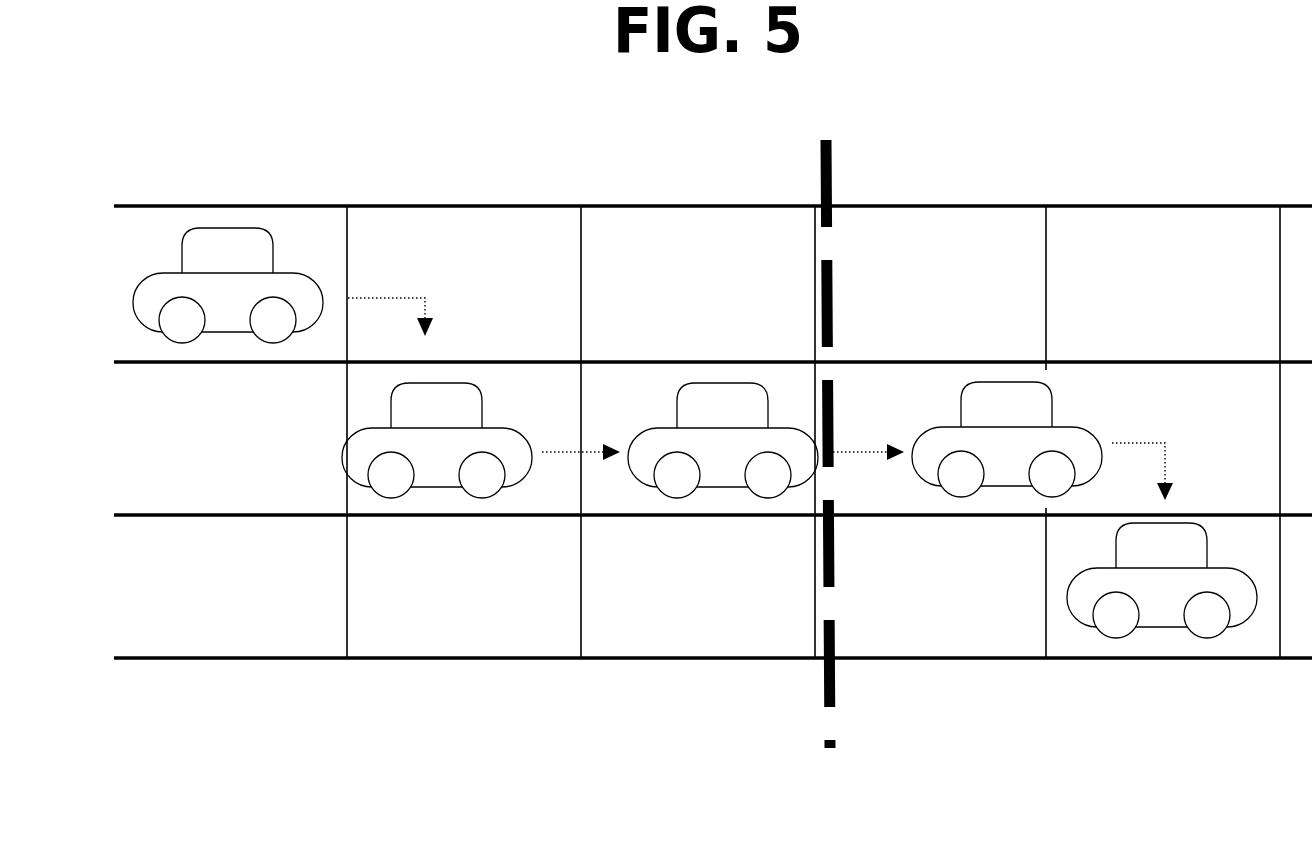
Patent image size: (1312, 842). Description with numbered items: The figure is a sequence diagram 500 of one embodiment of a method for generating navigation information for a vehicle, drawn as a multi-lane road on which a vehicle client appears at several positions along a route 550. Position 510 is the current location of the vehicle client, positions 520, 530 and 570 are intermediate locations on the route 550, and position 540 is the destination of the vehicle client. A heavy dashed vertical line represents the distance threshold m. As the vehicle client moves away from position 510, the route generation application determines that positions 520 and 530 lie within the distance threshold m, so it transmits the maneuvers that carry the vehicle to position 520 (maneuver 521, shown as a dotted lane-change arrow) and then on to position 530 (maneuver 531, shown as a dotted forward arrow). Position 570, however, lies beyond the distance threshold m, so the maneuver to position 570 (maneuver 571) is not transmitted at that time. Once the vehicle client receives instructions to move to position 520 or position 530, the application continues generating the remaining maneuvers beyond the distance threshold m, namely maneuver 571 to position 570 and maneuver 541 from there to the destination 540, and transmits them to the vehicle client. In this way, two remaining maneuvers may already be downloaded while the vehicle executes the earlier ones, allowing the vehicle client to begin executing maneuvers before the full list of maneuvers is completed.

The sequence diagram 500 is at (328, 146).
The position 510 is at (228, 285).
The position 520 is at (437, 440).
The maneuver 521 is at (427, 312).
The position 530 is at (723, 440).
The maneuver 531 is at (560, 452).
The destination 540 is at (1162, 580).
The maneuver 541 is at (1167, 448).
The route 550 is at (211, 606).
The position 570 is at (1007, 439).
The maneuver 571 is at (856, 452).
The distance threshold m is at (831, 714).